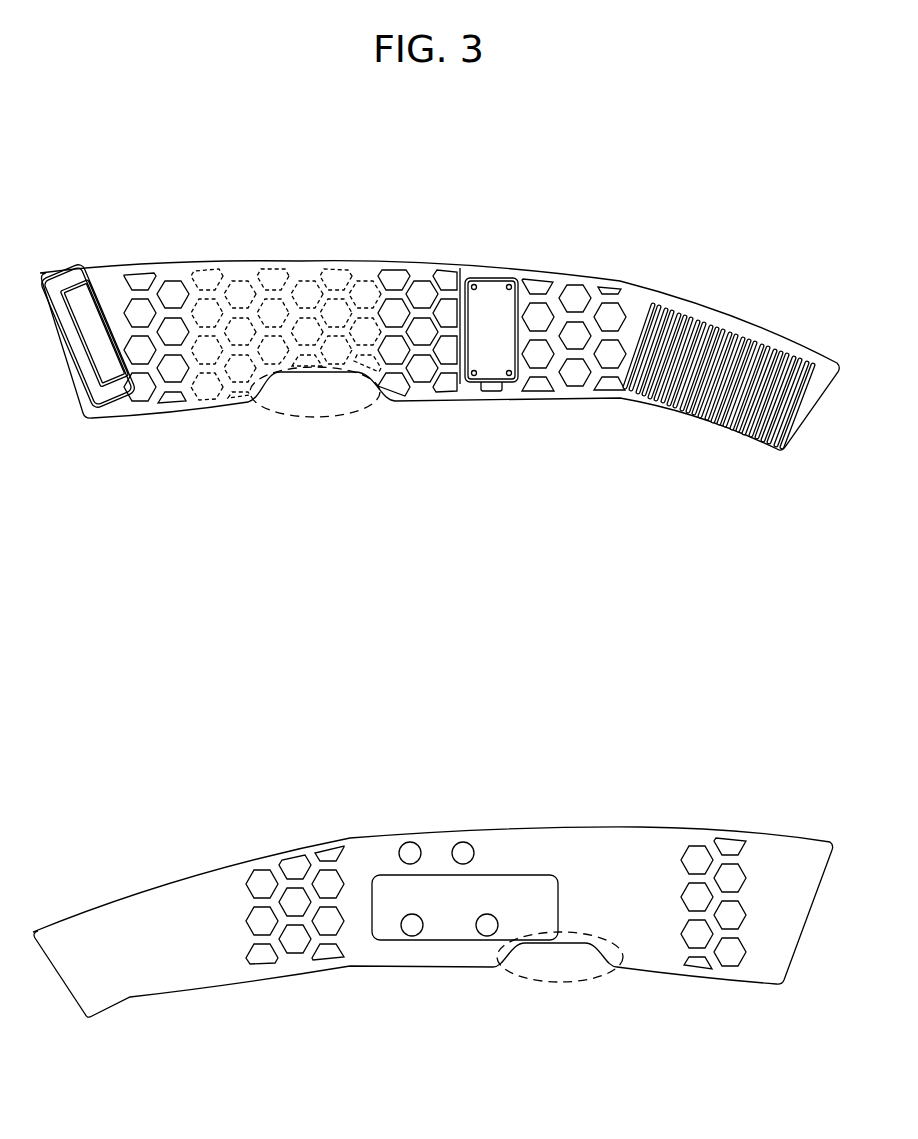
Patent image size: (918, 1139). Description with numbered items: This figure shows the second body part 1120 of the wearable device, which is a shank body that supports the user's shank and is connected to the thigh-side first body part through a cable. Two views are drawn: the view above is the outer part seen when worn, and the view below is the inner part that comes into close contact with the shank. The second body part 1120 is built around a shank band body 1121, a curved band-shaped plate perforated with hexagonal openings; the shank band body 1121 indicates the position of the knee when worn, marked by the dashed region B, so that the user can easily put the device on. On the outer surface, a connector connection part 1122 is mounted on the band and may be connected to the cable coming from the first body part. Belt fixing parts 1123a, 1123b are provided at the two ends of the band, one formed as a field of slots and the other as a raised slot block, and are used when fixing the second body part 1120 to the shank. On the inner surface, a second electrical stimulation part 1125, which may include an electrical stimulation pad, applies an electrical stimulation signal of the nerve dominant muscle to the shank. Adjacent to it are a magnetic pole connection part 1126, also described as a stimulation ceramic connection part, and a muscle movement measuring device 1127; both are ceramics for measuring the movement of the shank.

The second body part 1120 is at (439, 340).
The shank band body 1121 is at (296, 258).
The connector connection part 1122 is at (497, 290).
The belt fixing part 1123a is at (725, 330).
The belt fixing part 1123b is at (112, 395).
The second electrical stimulation part 1125 is at (512, 874).
The magnetic pole connection part 1126 is at (486, 935).
The muscle movement measuring device 1127 is at (410, 845).
The knee position B is at (318, 420).